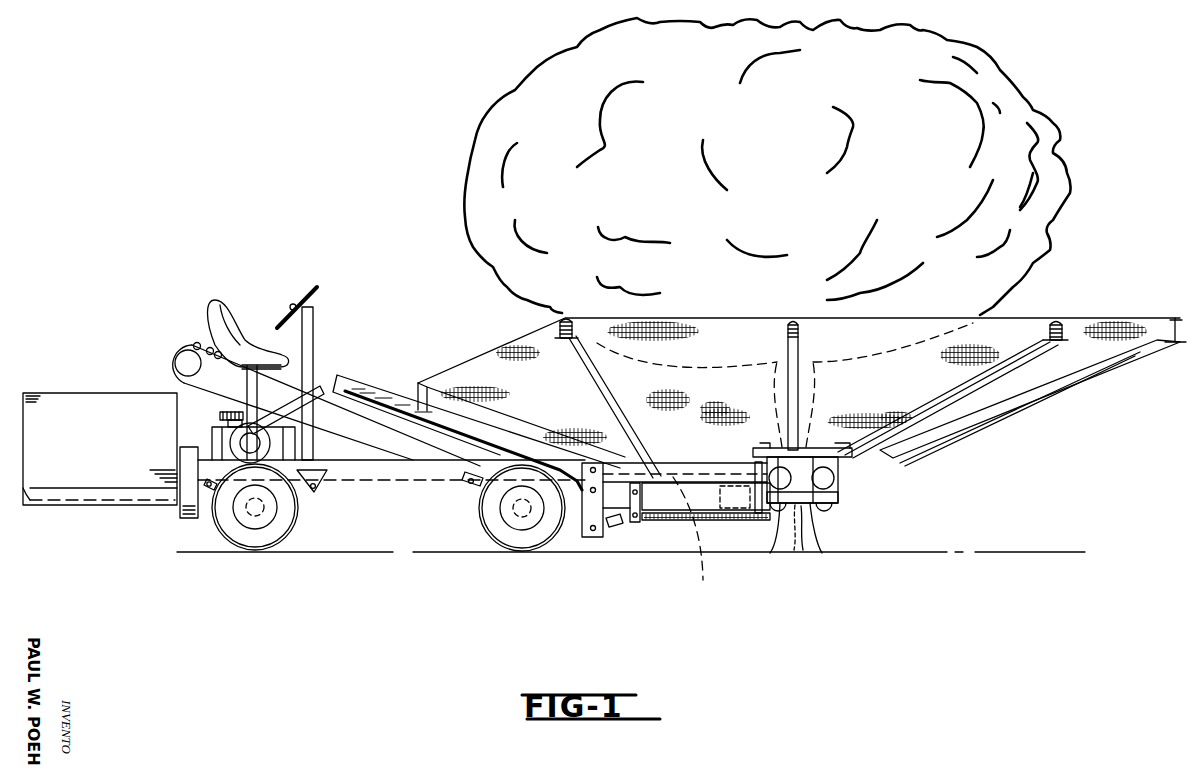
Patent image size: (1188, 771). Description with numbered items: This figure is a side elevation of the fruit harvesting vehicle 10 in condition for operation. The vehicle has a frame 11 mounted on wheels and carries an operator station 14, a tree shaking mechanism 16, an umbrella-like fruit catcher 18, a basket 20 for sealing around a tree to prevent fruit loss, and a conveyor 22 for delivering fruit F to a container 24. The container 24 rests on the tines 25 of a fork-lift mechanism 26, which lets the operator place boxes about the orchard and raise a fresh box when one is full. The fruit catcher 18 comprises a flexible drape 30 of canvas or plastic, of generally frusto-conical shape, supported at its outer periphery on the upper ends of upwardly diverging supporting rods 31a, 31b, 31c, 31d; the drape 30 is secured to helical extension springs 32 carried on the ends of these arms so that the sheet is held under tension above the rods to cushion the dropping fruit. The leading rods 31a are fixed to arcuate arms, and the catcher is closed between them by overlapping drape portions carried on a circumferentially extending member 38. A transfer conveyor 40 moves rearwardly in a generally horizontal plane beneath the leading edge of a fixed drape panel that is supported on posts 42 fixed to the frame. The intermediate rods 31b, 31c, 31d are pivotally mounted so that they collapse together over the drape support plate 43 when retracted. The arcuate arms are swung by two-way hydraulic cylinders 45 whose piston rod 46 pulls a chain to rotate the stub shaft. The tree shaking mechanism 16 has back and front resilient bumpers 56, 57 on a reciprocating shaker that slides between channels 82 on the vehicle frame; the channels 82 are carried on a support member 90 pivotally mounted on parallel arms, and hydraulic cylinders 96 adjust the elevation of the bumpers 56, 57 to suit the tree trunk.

The fruit harvesting vehicle 10 is at (318, 579).
The frame 11 is at (358, 473).
The operator station 14 is at (336, 256).
The tree shaking mechanism 16 is at (897, 500).
The umbrella-like fruit catcher 18 is at (1071, 422).
The basket 20 is at (810, 470).
The conveyor 22 is at (161, 344).
The container 24 is at (58, 397).
The tines 25 is at (86, 505).
The fork-lift mechanism 26 is at (176, 529).
The flexible drape 30 is at (927, 328).
The leading support rods 31a is at (1083, 378).
The intermediate support rod 31b is at (947, 407).
The intermediate support rod 31c is at (780, 345).
The support rods 31d is at (563, 345).
The helical extension springs 32 is at (1072, 325).
The circumferentially extending member 38 is at (1165, 308).
The transfer conveyor 40 is at (696, 539).
The posts 42 is at (420, 387).
The drape support plate 43 is at (373, 384).
The two-way hydraulic cylinders 45 is at (668, 523).
The piston rod 46 is at (810, 520).
The back resilient bumper 56 is at (790, 553).
The front resilient bumper 57 is at (813, 505).
The channels 82 is at (657, 500).
The support member 90 is at (635, 522).
The hydraulic cylinders 96 is at (613, 530).
The fruit F is at (196, 342).